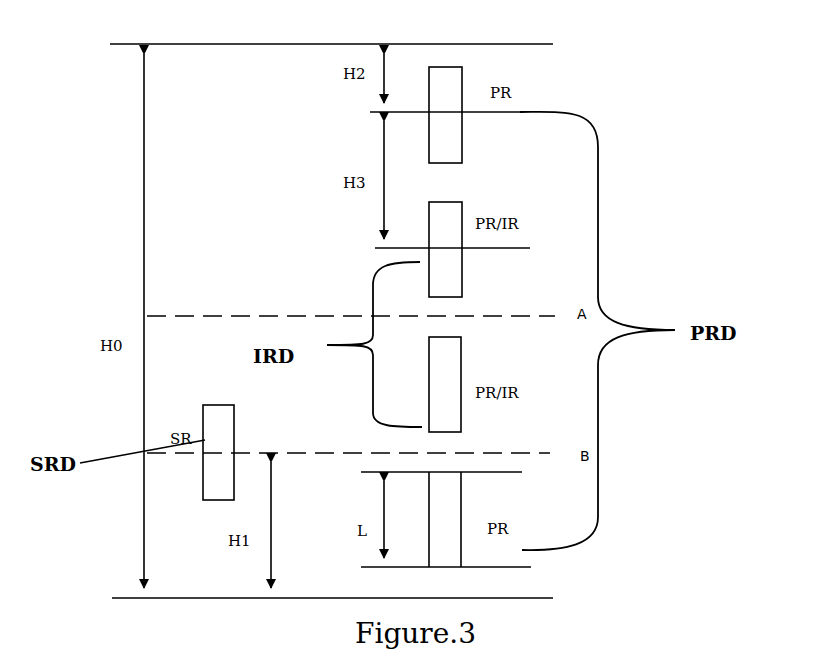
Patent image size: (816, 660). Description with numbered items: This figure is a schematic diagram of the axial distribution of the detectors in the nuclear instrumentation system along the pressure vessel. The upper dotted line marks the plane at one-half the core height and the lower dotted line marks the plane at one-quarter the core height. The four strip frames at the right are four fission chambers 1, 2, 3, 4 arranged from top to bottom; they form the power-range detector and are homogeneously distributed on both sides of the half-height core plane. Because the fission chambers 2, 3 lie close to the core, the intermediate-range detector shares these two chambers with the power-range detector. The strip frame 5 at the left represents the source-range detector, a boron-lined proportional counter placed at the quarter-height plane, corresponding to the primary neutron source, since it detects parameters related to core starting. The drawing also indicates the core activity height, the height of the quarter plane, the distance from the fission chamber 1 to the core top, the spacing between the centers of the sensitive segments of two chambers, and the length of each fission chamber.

The fission chamber 1 is at (445, 115).
The fission chamber 2 is at (445, 249).
The fission chamber 3 is at (445, 384).
The fission chamber 4 is at (446, 519).
The SR detector 5 is at (218, 452).